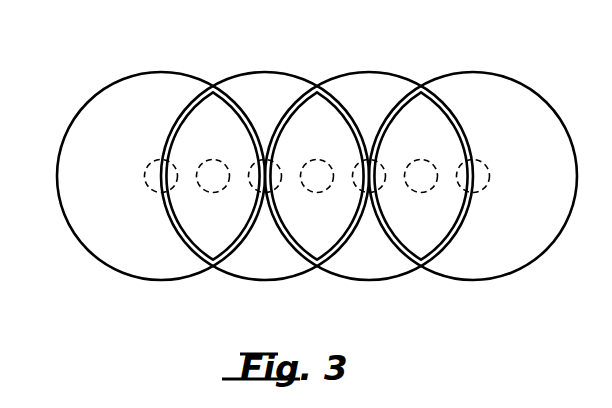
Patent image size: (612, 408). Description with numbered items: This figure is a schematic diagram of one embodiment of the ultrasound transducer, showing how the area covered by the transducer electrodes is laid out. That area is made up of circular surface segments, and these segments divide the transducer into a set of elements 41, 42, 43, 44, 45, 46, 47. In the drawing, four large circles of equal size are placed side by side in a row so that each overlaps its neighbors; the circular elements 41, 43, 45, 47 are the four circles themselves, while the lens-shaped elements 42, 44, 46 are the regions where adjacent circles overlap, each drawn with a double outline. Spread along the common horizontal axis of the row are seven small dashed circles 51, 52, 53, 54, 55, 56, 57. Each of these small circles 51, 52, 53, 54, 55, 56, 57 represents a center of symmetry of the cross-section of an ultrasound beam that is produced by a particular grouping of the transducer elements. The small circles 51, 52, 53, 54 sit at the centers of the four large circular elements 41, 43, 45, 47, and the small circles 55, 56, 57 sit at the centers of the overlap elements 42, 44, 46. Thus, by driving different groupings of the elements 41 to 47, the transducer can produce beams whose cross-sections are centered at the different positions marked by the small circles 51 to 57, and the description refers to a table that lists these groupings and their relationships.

The transducer element 41 is at (142, 82).
The transducer element 42 is at (203, 112).
The transducer element 43 is at (264, 83).
The transducer element 44 is at (315, 110).
The transducer element 45 is at (376, 84).
The transducer element 46 is at (442, 117).
The transducer element 47 is at (488, 80).
The small circle 51 is at (152, 190).
The small circle 52 is at (263, 193).
The small circle 53 is at (369, 193).
The small circle 54 is at (481, 191).
The small circle 55 is at (208, 191).
The small circle 56 is at (318, 193).
The small circle 57 is at (423, 193).